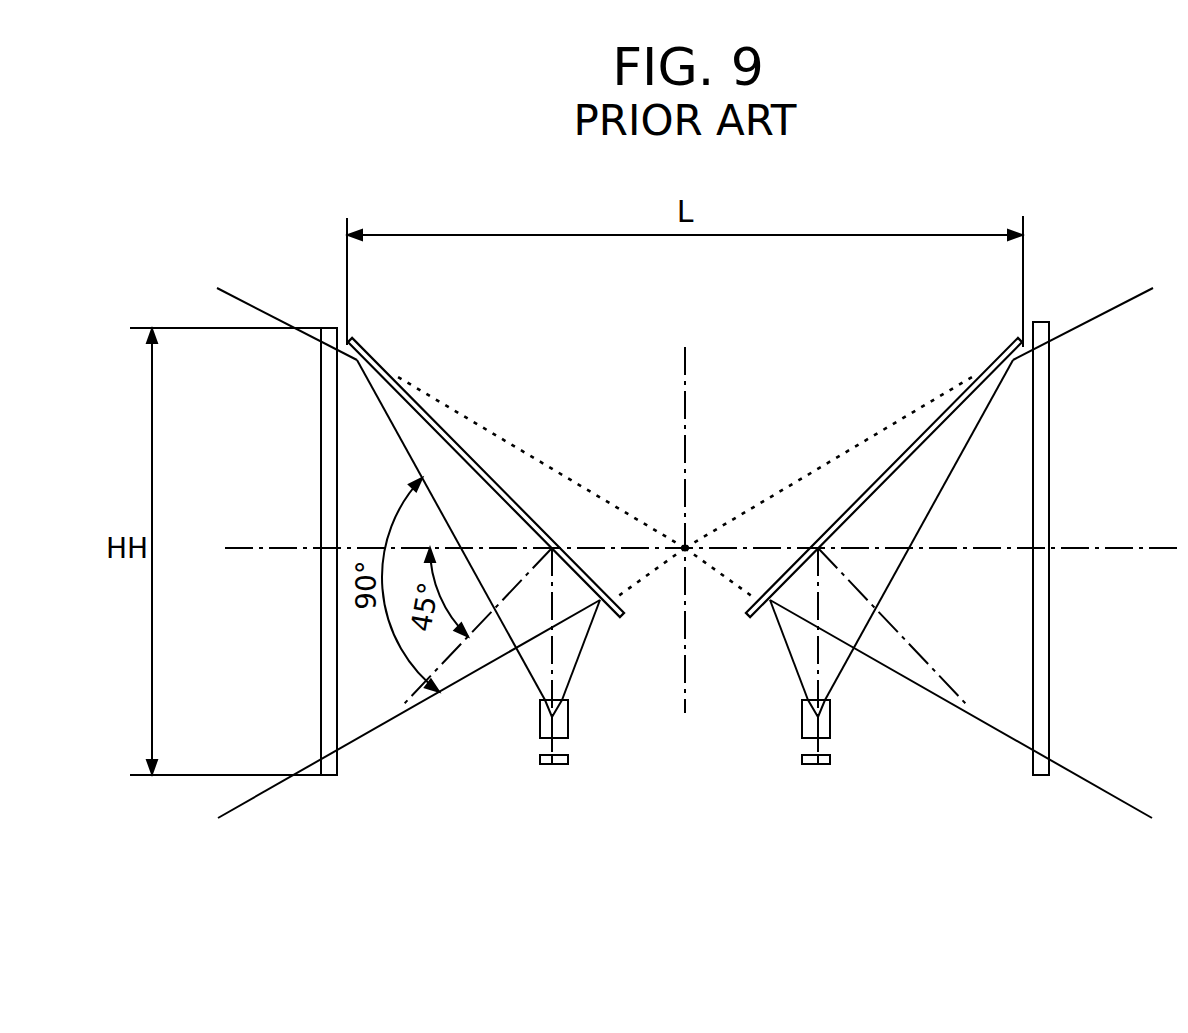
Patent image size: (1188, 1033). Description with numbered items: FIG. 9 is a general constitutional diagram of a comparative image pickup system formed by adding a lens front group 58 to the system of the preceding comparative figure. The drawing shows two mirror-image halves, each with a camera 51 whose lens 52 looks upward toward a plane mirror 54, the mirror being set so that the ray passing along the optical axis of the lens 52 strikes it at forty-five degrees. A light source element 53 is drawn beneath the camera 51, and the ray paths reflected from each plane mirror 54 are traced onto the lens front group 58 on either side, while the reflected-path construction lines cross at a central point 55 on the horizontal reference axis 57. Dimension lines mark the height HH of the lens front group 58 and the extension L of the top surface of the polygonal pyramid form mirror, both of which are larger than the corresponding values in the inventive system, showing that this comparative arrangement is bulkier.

The camera 51 is at (685, 681).
The lens 52 is at (540, 708).
The light source 53 is at (685, 784).
The plane mirror 54 is at (438, 415).
The intersection point of optical axes 55 is at (688, 541).
The horizontal optical axis 57 is at (1131, 548).
The lens front group 58 is at (335, 326).